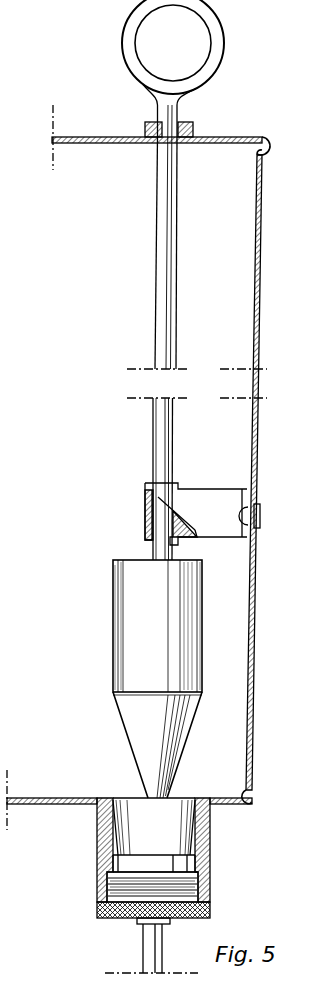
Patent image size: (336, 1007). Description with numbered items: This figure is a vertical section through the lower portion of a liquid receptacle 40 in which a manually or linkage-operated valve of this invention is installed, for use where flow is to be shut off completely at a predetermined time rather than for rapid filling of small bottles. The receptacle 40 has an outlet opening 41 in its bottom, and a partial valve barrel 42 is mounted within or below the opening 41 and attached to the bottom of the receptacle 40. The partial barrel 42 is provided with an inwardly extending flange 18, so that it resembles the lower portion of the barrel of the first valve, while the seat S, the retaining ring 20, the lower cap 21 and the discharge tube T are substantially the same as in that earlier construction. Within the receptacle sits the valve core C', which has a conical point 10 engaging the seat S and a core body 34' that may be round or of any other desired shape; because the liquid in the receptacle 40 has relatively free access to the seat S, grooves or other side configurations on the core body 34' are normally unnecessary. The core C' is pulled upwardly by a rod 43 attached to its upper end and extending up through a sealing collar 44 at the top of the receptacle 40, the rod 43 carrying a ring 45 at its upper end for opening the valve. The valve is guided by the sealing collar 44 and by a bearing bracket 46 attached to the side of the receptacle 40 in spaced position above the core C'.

The ring 45 is at (224, 60).
The sealing collar 44 is at (190, 128).
The rod 43 is at (168, 340).
The receptacle 40 is at (218, 471).
The bearing bracket 46 is at (202, 514).
The core body 34' is at (176, 679).
The valve core C' is at (143, 608).
The conical point 10 is at (163, 785).
The outlet opening 41 is at (115, 797).
The partial valve barrel 42 is at (100, 842).
The seat S is at (150, 842).
The inwardly extending flange 18 is at (193, 850).
The retaining ring 20 is at (172, 873).
The lower cap 21 is at (210, 912).
The discharge tube T is at (156, 950).